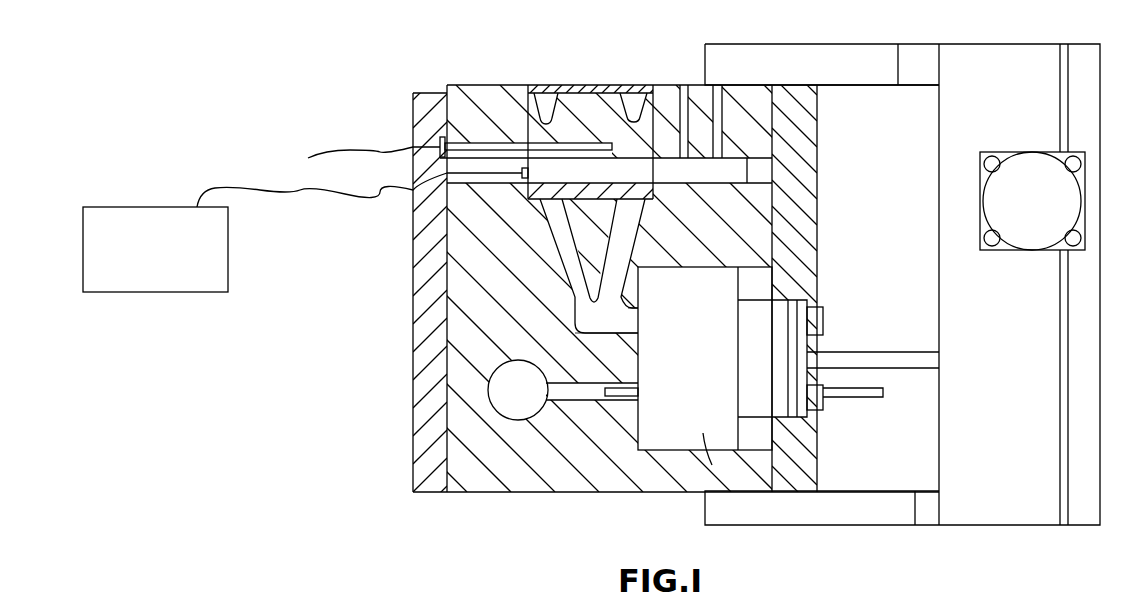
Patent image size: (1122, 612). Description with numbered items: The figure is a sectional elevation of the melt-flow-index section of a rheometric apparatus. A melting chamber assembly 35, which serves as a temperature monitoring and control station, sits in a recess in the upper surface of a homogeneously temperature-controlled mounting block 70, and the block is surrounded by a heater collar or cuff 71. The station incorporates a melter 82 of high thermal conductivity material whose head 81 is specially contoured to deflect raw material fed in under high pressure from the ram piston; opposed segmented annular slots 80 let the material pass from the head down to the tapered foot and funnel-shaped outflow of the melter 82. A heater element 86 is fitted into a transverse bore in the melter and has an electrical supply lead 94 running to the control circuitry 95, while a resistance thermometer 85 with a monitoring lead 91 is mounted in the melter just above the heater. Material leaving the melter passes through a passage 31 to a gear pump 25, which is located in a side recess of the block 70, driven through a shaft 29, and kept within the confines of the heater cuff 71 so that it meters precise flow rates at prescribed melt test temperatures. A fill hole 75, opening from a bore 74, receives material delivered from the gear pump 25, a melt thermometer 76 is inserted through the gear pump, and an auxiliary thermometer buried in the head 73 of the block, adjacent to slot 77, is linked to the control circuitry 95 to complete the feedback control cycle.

The gear pump 25 is at (671, 382).
The shaft 29 is at (861, 352).
The passage 31 is at (580, 318).
The melting chamber assembly 35 is at (563, 243).
The mounting block 70 is at (502, 483).
The heater collar or cuff 71 is at (418, 472).
The head of the block 73 is at (670, 107).
The bore 74 is at (506, 400).
The fill hole 75 is at (568, 402).
The melt thermometer 76 is at (619, 398).
The slot 77 is at (702, 145).
The segmented annular slots 80 is at (627, 110).
The head of the melter 81 is at (553, 112).
The melter 82 is at (613, 196).
The resistance thermometer 85 is at (498, 145).
The heater element 86 is at (557, 170).
The monitoring lead 91 is at (343, 148).
The electrical supply lead 94 is at (387, 198).
The control circuitry 95 is at (142, 284).